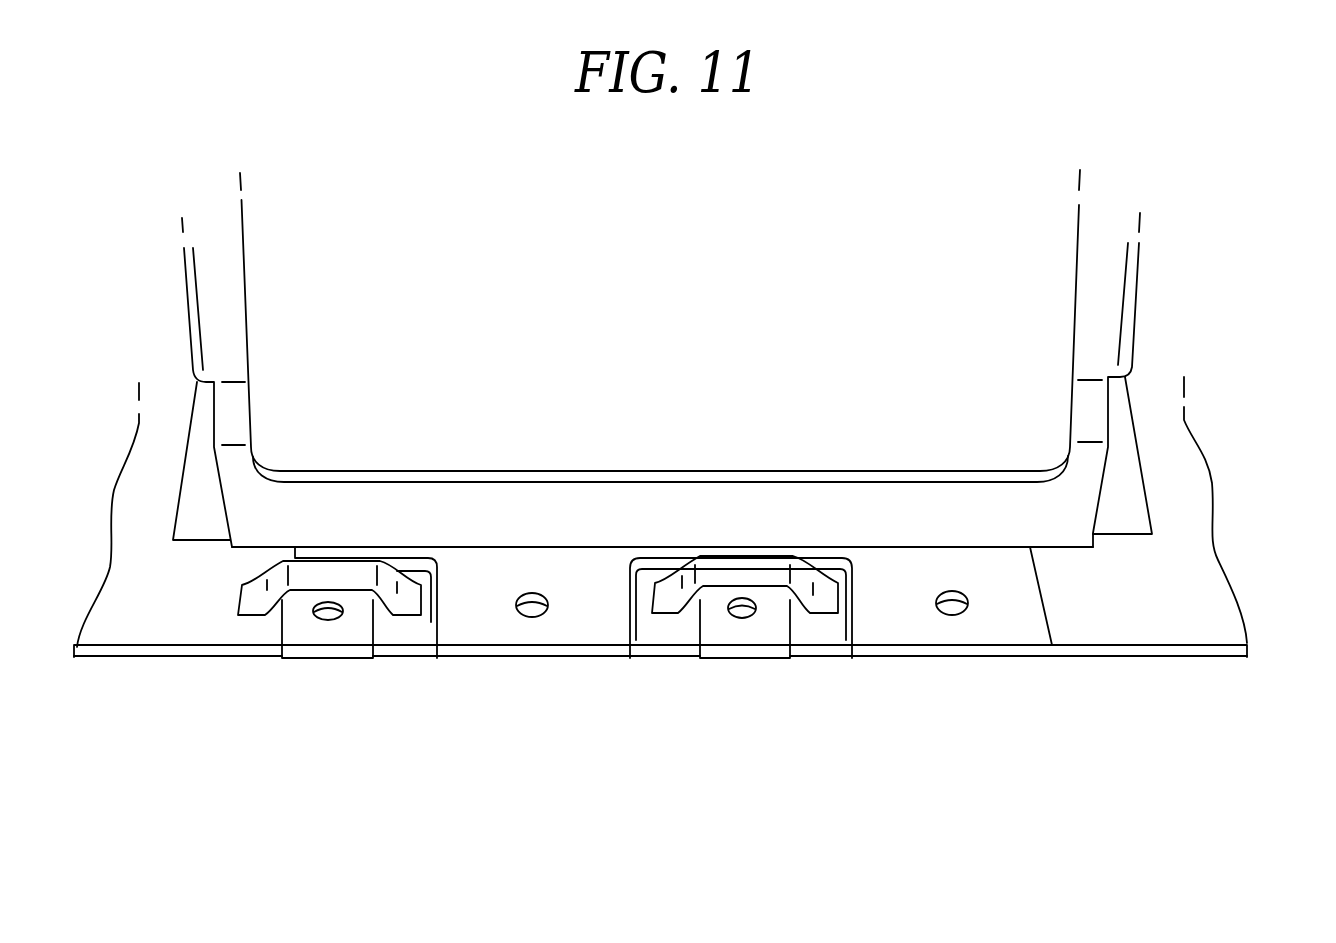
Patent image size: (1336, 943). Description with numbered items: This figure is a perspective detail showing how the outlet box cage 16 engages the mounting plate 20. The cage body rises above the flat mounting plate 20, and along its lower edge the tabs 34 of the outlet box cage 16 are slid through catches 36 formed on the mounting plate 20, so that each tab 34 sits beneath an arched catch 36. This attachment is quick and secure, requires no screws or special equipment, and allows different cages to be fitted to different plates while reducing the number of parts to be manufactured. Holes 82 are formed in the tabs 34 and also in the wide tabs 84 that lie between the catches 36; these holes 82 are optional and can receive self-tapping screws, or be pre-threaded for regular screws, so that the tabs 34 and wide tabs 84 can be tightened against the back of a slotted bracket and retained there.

The outlet box cage 16 is at (1186, 274).
The mounting plate 20 is at (1183, 605).
The tabs 34 is at (340, 635).
The catches 36 is at (332, 570).
The holes 82 is at (322, 612).
The wide tabs 84 is at (477, 637).